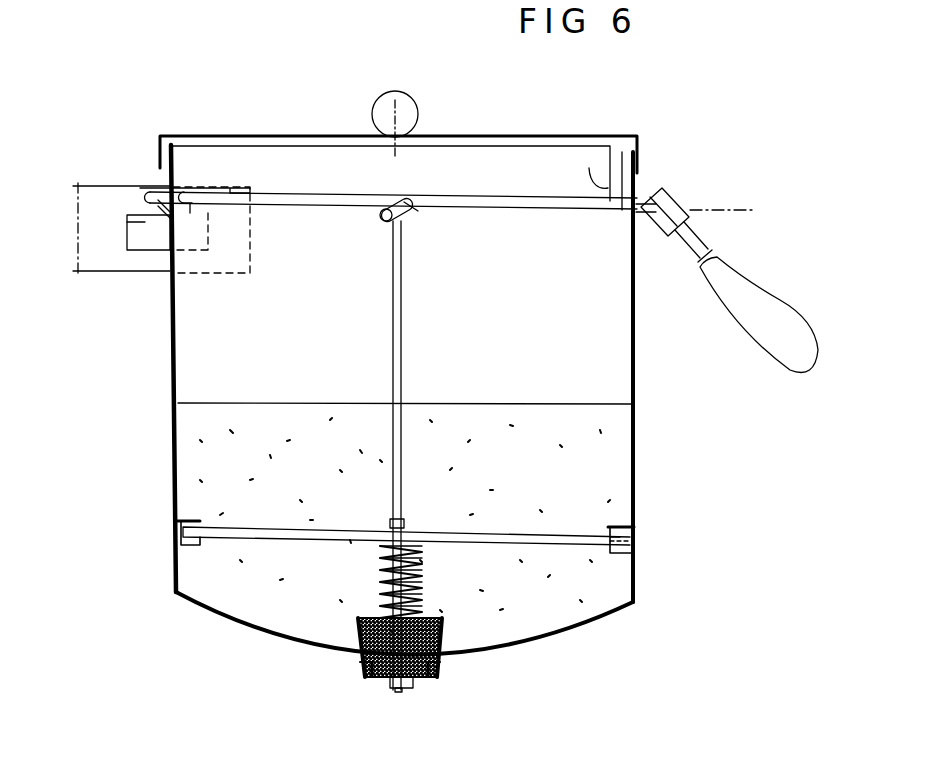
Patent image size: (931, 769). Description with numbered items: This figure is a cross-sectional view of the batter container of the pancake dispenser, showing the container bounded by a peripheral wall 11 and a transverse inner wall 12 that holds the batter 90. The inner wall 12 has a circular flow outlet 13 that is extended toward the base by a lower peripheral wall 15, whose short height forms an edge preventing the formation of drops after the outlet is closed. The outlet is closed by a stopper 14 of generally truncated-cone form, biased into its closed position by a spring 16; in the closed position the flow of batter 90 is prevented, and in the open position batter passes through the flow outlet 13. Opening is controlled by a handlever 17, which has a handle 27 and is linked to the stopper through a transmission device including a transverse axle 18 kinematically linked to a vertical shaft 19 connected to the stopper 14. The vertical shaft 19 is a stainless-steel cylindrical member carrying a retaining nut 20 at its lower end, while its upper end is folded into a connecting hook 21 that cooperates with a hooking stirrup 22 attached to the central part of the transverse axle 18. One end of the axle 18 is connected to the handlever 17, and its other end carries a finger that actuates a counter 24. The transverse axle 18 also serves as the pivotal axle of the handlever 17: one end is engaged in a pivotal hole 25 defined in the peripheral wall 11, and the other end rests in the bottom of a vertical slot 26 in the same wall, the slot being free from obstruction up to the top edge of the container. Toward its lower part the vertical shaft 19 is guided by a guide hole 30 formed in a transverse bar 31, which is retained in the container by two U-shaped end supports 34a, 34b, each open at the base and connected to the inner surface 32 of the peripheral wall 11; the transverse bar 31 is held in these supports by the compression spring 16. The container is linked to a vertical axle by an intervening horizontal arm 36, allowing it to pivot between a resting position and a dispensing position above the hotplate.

The peripheral wall 11 is at (172, 378).
The transverse inner wall 12 is at (218, 616).
The flow outlet 13 is at (374, 688).
The stopper 14 is at (456, 634).
The lower peripheral wall 15 is at (358, 660).
The spring 16 is at (440, 579).
The handlever 17 is at (724, 234).
The transverse axle 18 is at (535, 207).
The vertical shaft 19 is at (398, 303).
The retaining nut 20 is at (408, 689).
The connecting hook 21 is at (385, 226).
The hooking stirrup 22 is at (410, 221).
The counter 24 is at (140, 247).
The pivotal hole 25 is at (193, 216).
The vertical slot 26 is at (604, 188).
The handle 27 is at (775, 355).
The guide hole 30 is at (408, 527).
The transverse bar 31 is at (518, 538).
The inner surface 32 is at (629, 377).
The end support 34a is at (194, 525).
The end support 34b is at (612, 526).
The horizontal arm 36 is at (103, 197).
The batter 90 is at (192, 436).